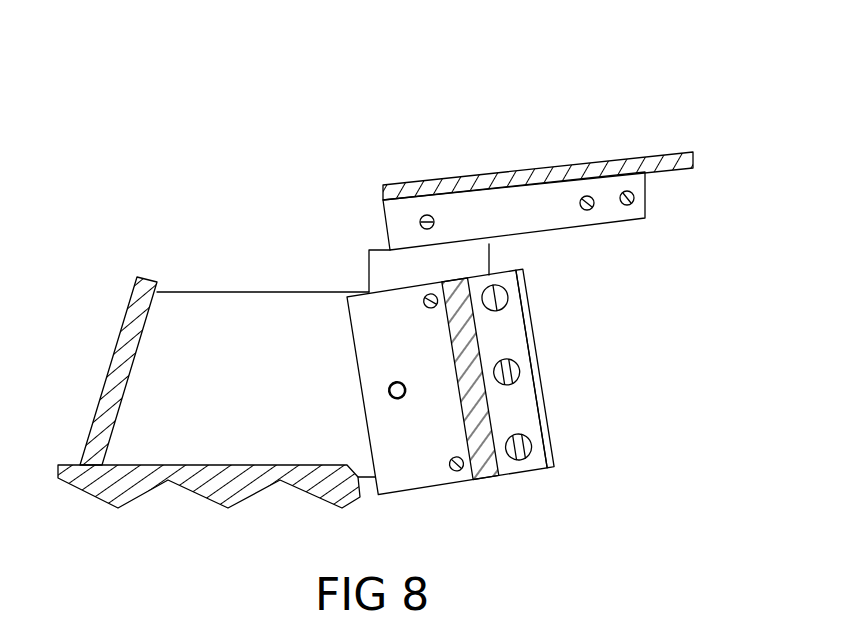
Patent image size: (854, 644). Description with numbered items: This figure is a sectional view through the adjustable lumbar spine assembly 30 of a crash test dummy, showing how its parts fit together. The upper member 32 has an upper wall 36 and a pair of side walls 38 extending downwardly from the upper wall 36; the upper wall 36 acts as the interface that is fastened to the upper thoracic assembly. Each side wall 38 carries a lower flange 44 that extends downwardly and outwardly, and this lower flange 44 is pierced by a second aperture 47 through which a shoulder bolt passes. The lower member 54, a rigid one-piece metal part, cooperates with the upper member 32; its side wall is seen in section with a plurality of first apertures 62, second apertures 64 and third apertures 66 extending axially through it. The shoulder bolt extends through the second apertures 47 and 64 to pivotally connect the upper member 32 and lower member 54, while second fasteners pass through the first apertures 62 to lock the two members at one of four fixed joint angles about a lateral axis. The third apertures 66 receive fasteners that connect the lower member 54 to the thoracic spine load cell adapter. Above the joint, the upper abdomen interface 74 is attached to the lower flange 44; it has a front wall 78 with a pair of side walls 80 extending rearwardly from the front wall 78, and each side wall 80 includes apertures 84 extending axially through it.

The adjustable lumbar spine assembly 30 is at (215, 109).
The upper member 32 is at (84, 502).
The upper wall 36 is at (138, 312).
The side walls 38 is at (228, 305).
The lower flange 44 is at (473, 258).
The second aperture 47 is at (405, 387).
The lower member 54 is at (517, 484).
The first apertures 62 is at (423, 300).
The second apertures 64 is at (408, 397).
The third apertures 66 is at (510, 358).
The upper abdomen interface 74 is at (547, 157).
The front wall 78 is at (680, 153).
The side walls 80 is at (503, 196).
The apertures 84 is at (419, 218).